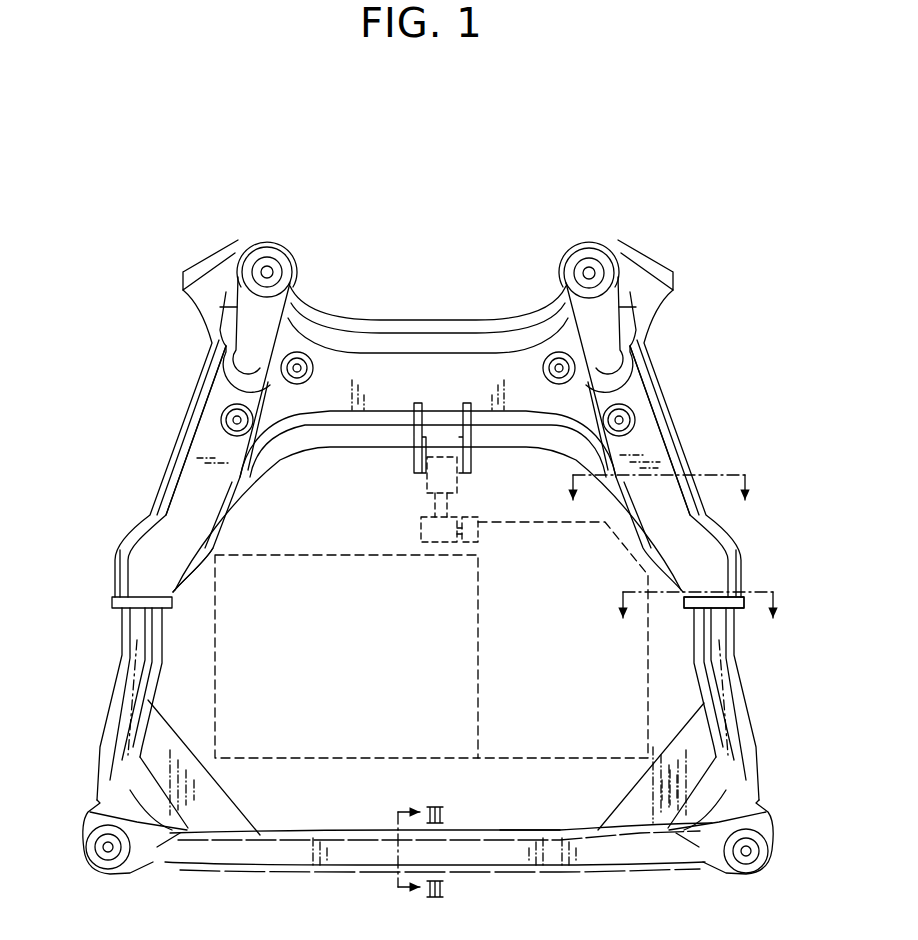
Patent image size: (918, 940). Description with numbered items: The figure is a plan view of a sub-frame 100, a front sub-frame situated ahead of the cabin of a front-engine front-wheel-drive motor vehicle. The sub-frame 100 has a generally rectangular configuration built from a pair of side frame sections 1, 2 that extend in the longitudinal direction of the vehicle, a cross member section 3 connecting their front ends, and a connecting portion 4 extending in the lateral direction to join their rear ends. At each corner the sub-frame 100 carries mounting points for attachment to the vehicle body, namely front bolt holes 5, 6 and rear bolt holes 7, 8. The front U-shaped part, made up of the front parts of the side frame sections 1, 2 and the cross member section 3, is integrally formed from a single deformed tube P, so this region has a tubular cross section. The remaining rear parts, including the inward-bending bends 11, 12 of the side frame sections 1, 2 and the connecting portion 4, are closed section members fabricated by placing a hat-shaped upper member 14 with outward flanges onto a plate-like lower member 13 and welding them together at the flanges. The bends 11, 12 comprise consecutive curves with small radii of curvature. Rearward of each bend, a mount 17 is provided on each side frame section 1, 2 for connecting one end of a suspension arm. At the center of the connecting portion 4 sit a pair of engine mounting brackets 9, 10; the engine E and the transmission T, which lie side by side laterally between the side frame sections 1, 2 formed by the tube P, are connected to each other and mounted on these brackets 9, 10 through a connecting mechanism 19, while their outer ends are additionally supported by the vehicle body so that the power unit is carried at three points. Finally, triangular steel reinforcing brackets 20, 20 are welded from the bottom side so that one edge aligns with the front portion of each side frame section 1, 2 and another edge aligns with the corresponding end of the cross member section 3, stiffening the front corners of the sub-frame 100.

The side frame section 1 is at (752, 681).
The side frame section 2 is at (108, 551).
The cross member section 3 is at (474, 828).
The connecting portion 4 is at (432, 320).
The front bolt hole 5 is at (748, 851).
The front bolt hole 6 is at (106, 846).
The rear bolt hole 7 is at (592, 273).
The rear bolt hole 8 is at (269, 272).
The engine mounting bracket 9 is at (471, 465).
The engine mounting bracket 10 is at (414, 465).
The bend 11 is at (743, 563).
The bend 12 is at (170, 565).
The lower member 13 is at (326, 440).
The upper member 14 is at (652, 460).
The mount 17 is at (162, 500).
The connecting mechanism 19 is at (410, 515).
The reinforcing bracket 20 is at (236, 798).
The sub-frame 100 is at (430, 568).
The engine E is at (350, 662).
The transmission T is at (562, 662).
The deformed tube P is at (530, 828).